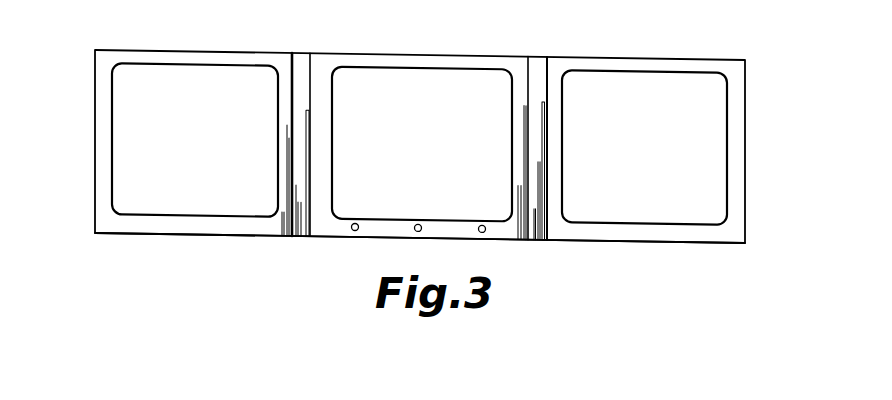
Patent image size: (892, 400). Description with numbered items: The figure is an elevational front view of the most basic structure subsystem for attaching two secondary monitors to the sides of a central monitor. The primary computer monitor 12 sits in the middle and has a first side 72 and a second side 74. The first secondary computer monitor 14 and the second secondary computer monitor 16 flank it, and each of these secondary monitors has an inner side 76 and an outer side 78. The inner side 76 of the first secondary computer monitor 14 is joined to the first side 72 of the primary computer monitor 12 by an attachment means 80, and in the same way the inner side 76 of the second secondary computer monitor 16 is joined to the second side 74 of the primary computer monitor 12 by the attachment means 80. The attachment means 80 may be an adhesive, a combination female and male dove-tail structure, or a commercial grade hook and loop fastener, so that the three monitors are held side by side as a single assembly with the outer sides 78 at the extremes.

The primary computer monitor 12 is at (422, 150).
The first secondary computer monitor 14 is at (195, 140).
The second secondary computer monitor 16 is at (644, 147).
The first side 72 is at (530, 58).
The second side 74 is at (310, 62).
The inner side 76 is at (297, 100).
The outer side 78 is at (95, 63).
The attachment means 80 is at (298, 234).